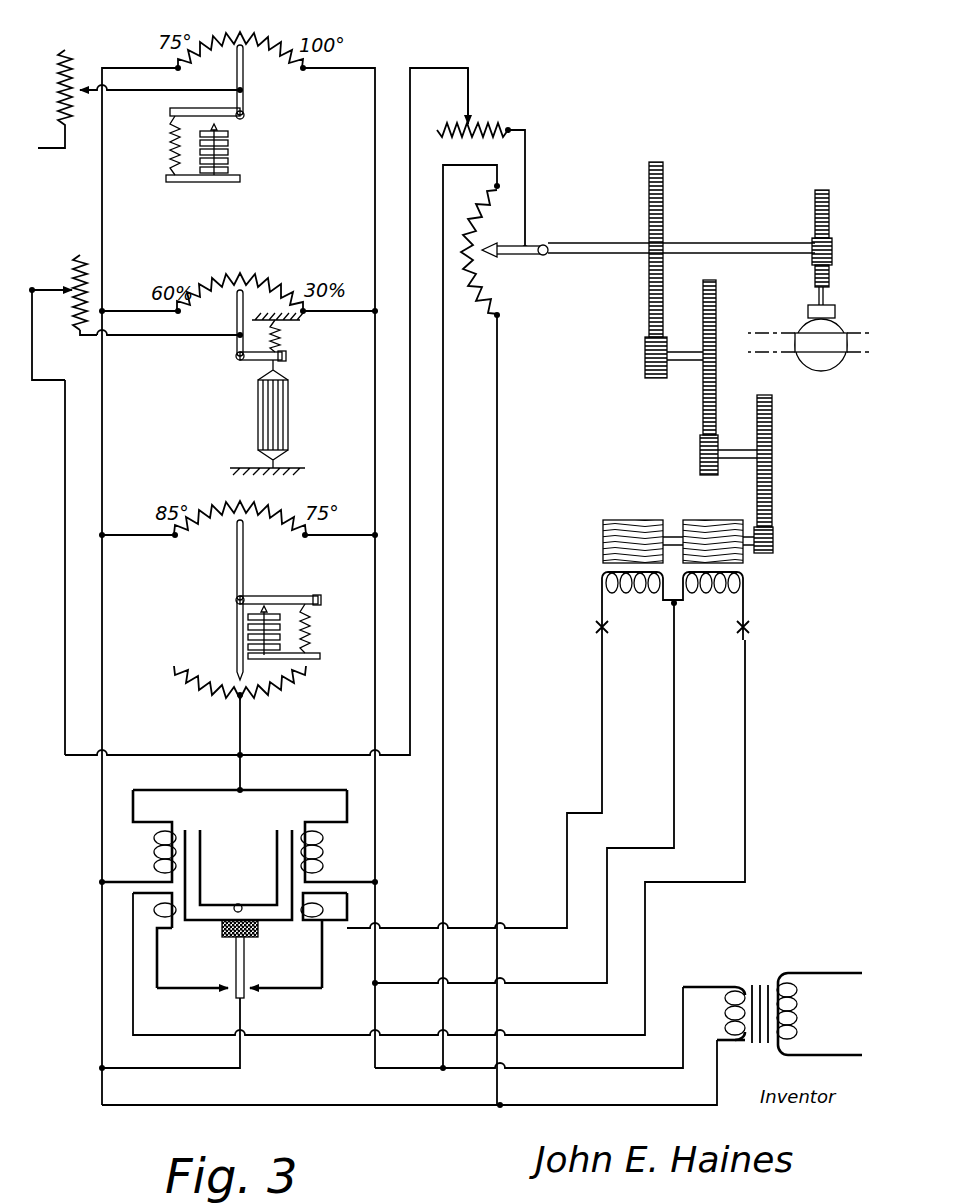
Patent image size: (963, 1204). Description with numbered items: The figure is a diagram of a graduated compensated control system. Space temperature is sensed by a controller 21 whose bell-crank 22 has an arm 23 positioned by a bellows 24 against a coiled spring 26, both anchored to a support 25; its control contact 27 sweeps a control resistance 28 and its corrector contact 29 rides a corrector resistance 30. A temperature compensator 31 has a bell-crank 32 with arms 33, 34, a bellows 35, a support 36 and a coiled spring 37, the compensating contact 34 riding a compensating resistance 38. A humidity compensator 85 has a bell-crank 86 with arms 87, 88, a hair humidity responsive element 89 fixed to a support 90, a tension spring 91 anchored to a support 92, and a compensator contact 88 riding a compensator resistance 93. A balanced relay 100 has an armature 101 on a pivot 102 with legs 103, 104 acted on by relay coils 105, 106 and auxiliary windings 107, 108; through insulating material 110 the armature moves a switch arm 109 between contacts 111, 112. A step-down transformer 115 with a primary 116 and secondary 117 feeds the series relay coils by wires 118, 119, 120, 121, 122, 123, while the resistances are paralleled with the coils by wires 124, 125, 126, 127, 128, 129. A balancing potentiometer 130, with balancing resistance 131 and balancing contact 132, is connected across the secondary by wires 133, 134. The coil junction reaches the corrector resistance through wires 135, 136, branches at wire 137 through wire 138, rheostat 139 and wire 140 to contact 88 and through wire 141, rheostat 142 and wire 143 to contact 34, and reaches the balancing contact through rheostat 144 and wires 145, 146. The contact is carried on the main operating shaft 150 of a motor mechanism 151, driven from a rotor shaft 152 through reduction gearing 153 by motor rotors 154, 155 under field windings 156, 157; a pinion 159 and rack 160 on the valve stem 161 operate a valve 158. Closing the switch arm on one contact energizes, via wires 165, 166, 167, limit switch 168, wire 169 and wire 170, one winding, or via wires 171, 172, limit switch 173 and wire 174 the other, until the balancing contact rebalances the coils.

The controller 21 is at (260, 600).
The bell-crank 22 is at (234, 602).
The arm 23 is at (316, 598).
The bellows 24 is at (275, 614).
The support 25 is at (320, 657).
The coiled spring 26 is at (312, 633).
The control contact 27 is at (238, 557).
The control resistance 28 is at (226, 507).
The corrector contact 29 is at (237, 632).
The corrector resistance 30 is at (208, 692).
The compensator 31 is at (207, 133).
The bell-crank 32 is at (248, 115).
The arm 33 is at (171, 112).
The compensating contact 34 is at (248, 70).
The bellows 35 is at (232, 143).
The support 36 is at (242, 178).
The coiled spring 37 is at (170, 150).
The compensating resistance 38 is at (238, 38).
The compensator 85 is at (260, 382).
The bell-crank 86 is at (236, 358).
The arm 87 is at (286, 358).
The compensator contact 88 is at (238, 308).
The humidity responsive element 89 is at (290, 408).
The support 90 is at (246, 468).
The tension spring 91 is at (284, 339).
The support 92 is at (298, 322).
The compensator resistance 93 is at (238, 280).
The balanced relay 100 is at (238, 893).
The armature 101 is at (212, 905).
The pivot 102 is at (240, 904).
The leg 103 is at (194, 841).
The leg 104 is at (286, 835).
The relay coil 105 is at (158, 851).
The relay coil 106 is at (320, 862).
The auxiliary winding 107 is at (172, 926).
The auxiliary winding 108 is at (322, 920).
The switch arm 109 is at (242, 978).
The insulating material 110 is at (228, 938).
The contact 111 is at (258, 992).
The contact 112 is at (225, 994).
The step-down transformer 115 is at (771, 998).
The primary 116 is at (798, 1014).
The secondary 117 is at (726, 1021).
The wire 118 is at (572, 1104).
The wire 119 is at (312, 1104).
The wire 120 is at (102, 992).
The wire 121 is at (377, 958).
The wire 122 is at (424, 1071).
The wire 123 is at (570, 1070).
The wire 124 is at (102, 802).
The wire 125 is at (102, 468).
The wire 126 is at (102, 200).
The wire 127 is at (375, 226).
The wire 128 is at (375, 416).
The wire 129 is at (377, 807).
The balancing potentiometer 130 is at (513, 263).
The balancing resistance 131 is at (480, 290).
The balancing contact 132 is at (508, 256).
The wire 133 is at (498, 474).
The wire 134 is at (444, 554).
The wire 135 is at (250, 770).
The wire 136 is at (250, 727).
The wire 137 is at (49, 382).
The wire 138 is at (63, 321).
The rheostat 139 is at (74, 270).
The wire 140 is at (142, 335).
The wire 141 is at (40, 242).
The rheostat 142 is at (72, 64).
The wire 143 is at (110, 96).
The rheostat 144 is at (493, 128).
The wire 145 is at (344, 752).
The wire 146 is at (528, 184).
The main operating shaft 150 is at (712, 247).
The motor mechanism 151 is at (710, 368).
The rotor shaft 152 is at (674, 540).
The reduction gearing 153 is at (678, 388).
The motor rotor 154 is at (718, 532).
The motor rotor 155 is at (620, 520).
The field winding 156 is at (716, 592).
The field winding 157 is at (637, 592).
The valve 158 is at (822, 360).
The pinion 159 is at (812, 242).
The rack 160 is at (814, 202).
The valve stem 161 is at (816, 296).
The wire 165 is at (188, 1068).
The wire 166 is at (309, 992).
The wire 167 is at (576, 813).
The limit switch 168 is at (595, 628).
The wire 169 is at (602, 604).
The wire 170 is at (641, 848).
The wire 171 is at (173, 992).
The wire 172 is at (280, 1036).
The limit switch 173 is at (752, 628).
The wire 174 is at (748, 599).